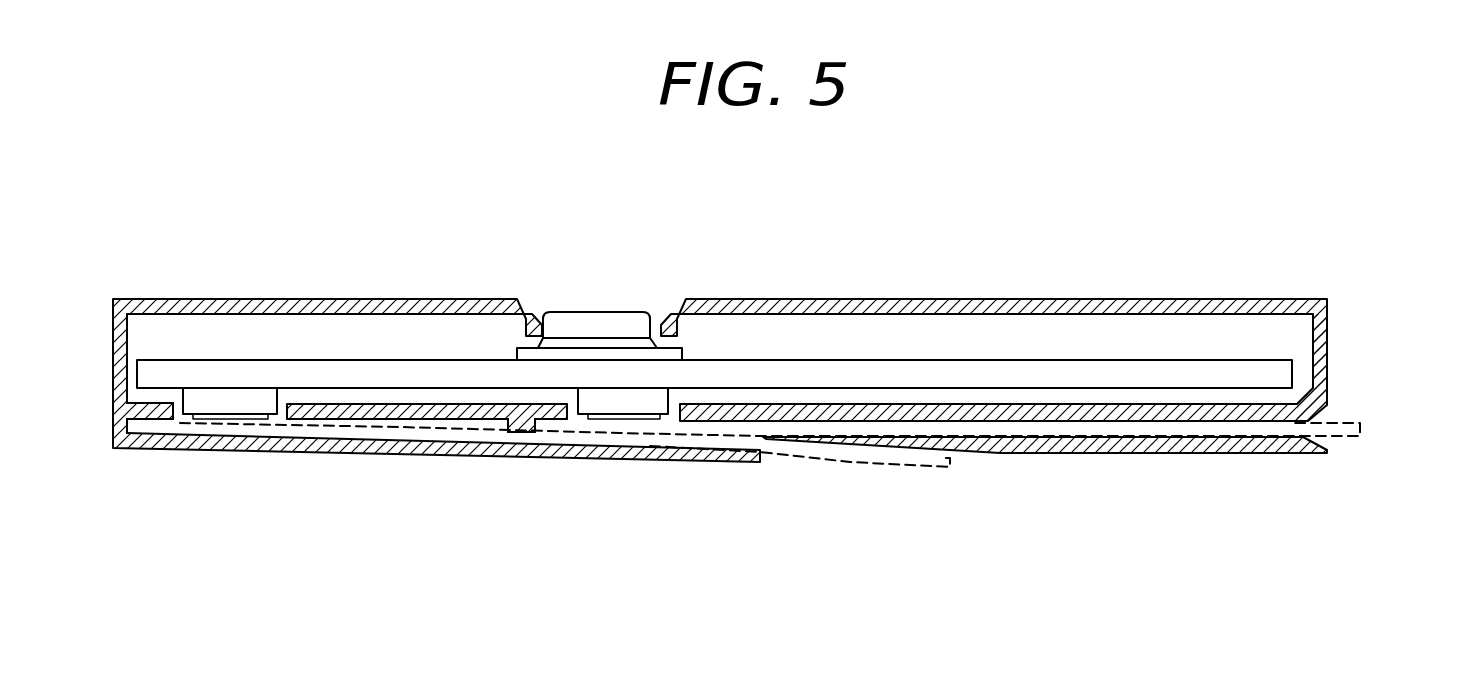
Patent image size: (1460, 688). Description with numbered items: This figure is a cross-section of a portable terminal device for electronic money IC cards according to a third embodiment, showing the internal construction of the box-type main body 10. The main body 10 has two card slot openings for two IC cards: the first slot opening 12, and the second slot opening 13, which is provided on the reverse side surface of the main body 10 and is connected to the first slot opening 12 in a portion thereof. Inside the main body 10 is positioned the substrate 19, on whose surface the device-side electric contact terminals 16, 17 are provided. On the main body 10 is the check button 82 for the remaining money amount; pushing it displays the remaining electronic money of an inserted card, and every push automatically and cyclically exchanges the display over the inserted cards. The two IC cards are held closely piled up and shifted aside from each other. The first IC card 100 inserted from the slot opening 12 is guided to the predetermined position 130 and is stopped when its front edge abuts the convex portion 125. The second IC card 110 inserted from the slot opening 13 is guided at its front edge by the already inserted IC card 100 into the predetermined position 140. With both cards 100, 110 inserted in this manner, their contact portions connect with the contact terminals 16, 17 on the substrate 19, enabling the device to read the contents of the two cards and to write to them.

The main body 10 is at (349, 298).
The first slot opening 12 is at (1318, 405).
The second slot opening 13 is at (762, 462).
The contact terminal 16 is at (623, 420).
The contact terminal 17 is at (233, 419).
The substrate 19 is at (718, 377).
The check button 82 is at (590, 323).
The first IC card 100 is at (1337, 437).
The second IC card 110 is at (922, 468).
The convex portion 125 is at (510, 430).
The predetermined position 130 is at (536, 421).
The predetermined position 140 is at (152, 426).